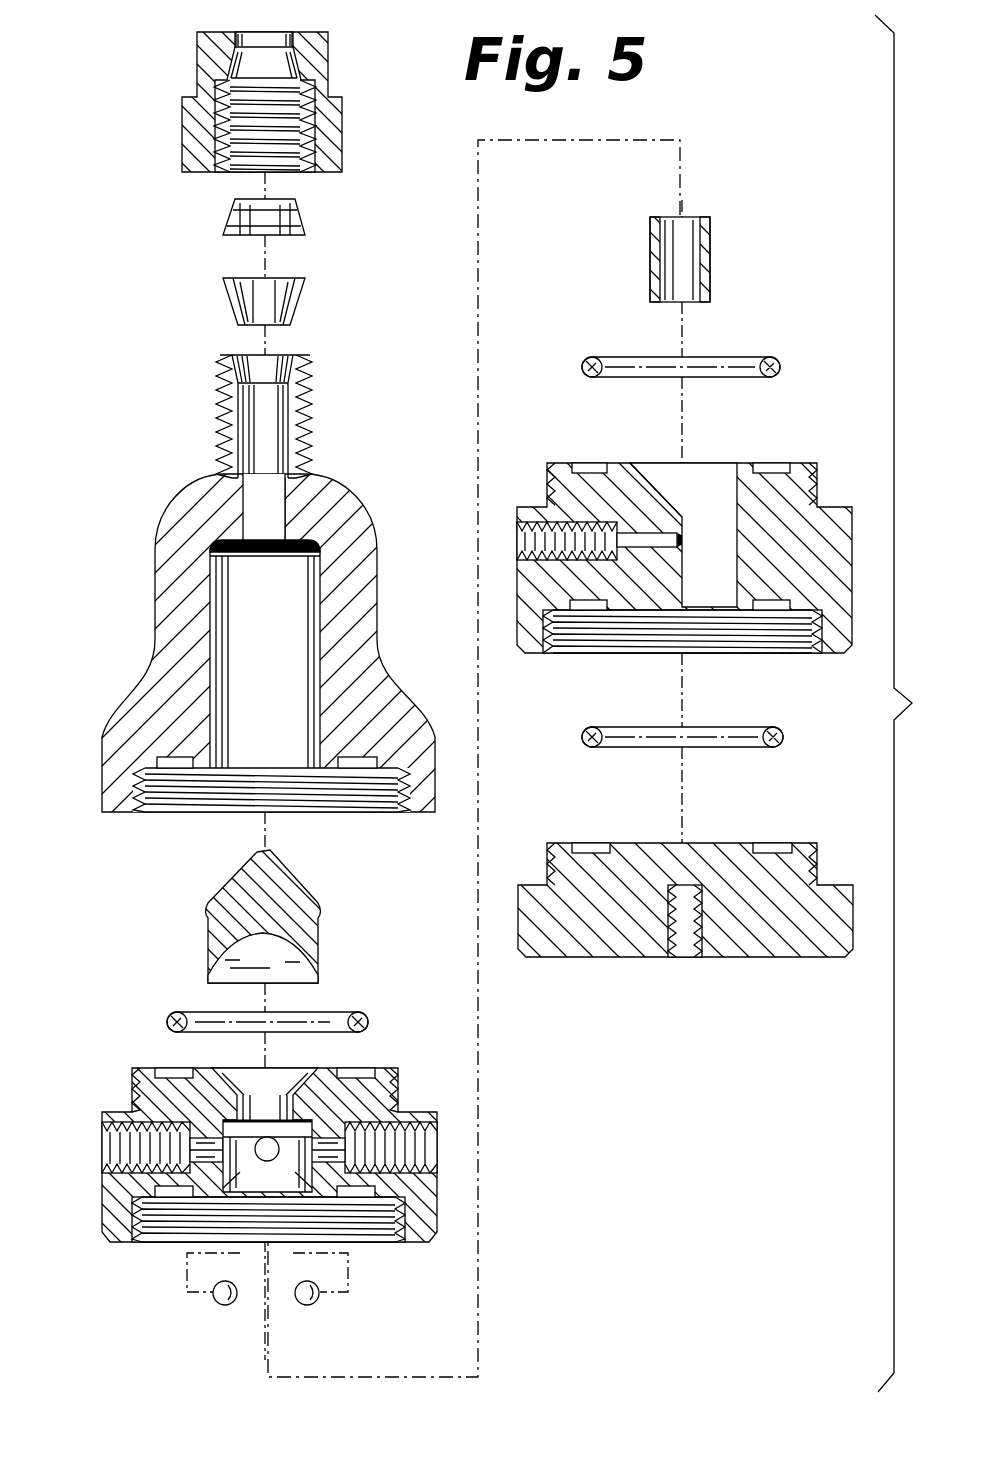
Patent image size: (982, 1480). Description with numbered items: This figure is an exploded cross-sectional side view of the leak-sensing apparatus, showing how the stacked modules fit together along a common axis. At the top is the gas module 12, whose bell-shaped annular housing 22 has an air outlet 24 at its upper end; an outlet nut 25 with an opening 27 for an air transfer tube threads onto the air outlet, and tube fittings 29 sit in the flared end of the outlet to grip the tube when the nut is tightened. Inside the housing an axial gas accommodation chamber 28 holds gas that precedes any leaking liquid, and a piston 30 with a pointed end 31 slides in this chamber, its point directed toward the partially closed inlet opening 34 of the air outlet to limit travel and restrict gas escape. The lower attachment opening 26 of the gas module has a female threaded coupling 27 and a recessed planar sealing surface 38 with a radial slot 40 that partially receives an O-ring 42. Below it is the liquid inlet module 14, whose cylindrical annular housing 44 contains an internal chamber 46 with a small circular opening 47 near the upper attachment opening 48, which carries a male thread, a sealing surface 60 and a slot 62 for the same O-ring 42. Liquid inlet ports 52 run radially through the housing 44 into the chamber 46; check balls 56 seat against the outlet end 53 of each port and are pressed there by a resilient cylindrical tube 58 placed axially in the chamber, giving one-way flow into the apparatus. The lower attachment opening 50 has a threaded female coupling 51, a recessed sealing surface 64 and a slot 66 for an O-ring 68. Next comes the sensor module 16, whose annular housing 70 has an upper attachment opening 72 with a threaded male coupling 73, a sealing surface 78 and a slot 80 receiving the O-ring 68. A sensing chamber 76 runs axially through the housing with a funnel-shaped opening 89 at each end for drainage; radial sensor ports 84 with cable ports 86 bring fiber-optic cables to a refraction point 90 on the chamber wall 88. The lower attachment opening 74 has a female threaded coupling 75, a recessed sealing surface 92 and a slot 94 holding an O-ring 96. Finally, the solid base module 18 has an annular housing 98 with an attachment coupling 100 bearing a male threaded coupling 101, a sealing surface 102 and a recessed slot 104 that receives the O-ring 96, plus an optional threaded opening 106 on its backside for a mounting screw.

The gas module 12 is at (278, 685).
The liquid inlet module 14 is at (438, 1197).
The sensor module 16 is at (701, 551).
The base module 18 is at (698, 897).
The annular housing 22 is at (165, 585).
The air outlet 24 is at (315, 407).
The outlet nut 25 is at (330, 120).
The attachment opening 26 is at (160, 815).
The opening 27 is at (270, 40).
The gas accommodation chamber 28 is at (292, 622).
The tube fittings 29 is at (312, 225).
The piston 30 is at (285, 902).
The pointed end 31 is at (268, 852).
The inlet opening 34 is at (222, 546).
The sealing surface 38 is at (330, 812).
The slot 40 is at (360, 758).
The O-ring 42 is at (362, 1022).
The annular housing 44 is at (255, 1173).
The internal chamber 46 is at (225, 1130).
The circular opening 47 is at (270, 1085).
The attachment opening 48 is at (130, 1068).
The attachment opening 50 is at (142, 1243).
The threaded female coupling 51 is at (385, 1242).
The liquid inlet ports 52 is at (102, 1148).
The outlet end 53 is at (272, 1147).
The check balls 56 is at (310, 1305).
The cylindrical tube 58 is at (712, 262).
The sealing surface 60 is at (175, 1068).
The slot 62 is at (345, 1068).
The sealing surface 64 is at (140, 1240).
The slot 66 is at (362, 1242).
The O-ring 68 is at (775, 363).
The annular housing 70 is at (840, 582).
The attachment opening 72 is at (818, 463).
The threaded male coupling 73 is at (548, 470).
The attachment opening 74 is at (798, 652).
The female threaded coupling 75 is at (575, 620).
The sensing chamber 76 is at (818, 496).
The sealing surface 78 is at (745, 463).
The slot 80 is at (790, 463).
The sensor ports 84 is at (520, 535).
The cable port 86 is at (632, 533).
The wall 88 is at (706, 465).
The funnel-shaped opening 89 is at (660, 612).
The refraction point 90 is at (702, 550).
The sealing surface 92 is at (737, 612).
The slot 94 is at (830, 610).
The O-ring 96 is at (782, 746).
The annular housing 98 is at (840, 956).
The attachment coupling 100 is at (818, 815).
The male threaded coupling 101 is at (547, 860).
The sealing surface 102 is at (615, 815).
The recessed slot 104 is at (766, 843).
The threaded opening 106 is at (690, 958).